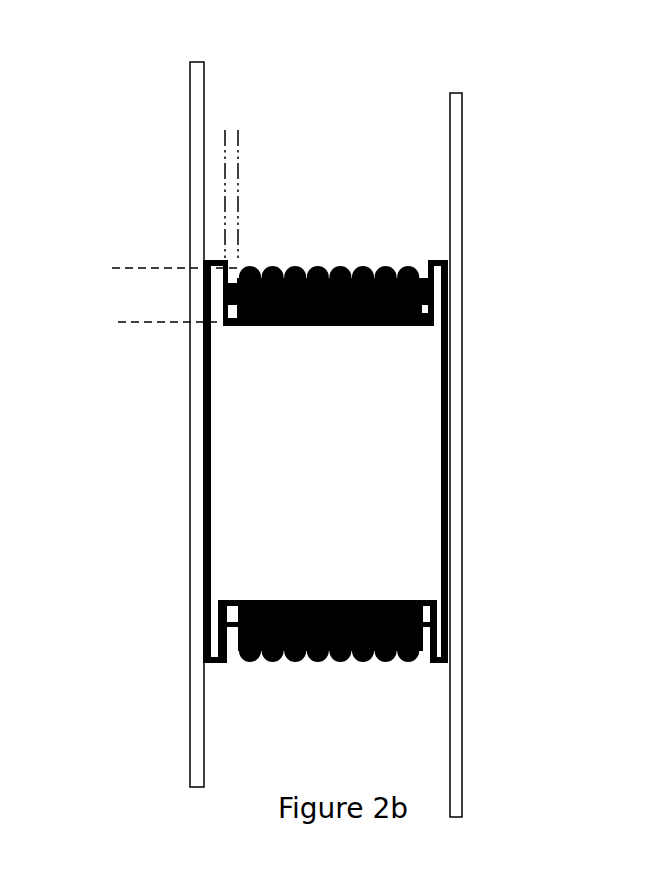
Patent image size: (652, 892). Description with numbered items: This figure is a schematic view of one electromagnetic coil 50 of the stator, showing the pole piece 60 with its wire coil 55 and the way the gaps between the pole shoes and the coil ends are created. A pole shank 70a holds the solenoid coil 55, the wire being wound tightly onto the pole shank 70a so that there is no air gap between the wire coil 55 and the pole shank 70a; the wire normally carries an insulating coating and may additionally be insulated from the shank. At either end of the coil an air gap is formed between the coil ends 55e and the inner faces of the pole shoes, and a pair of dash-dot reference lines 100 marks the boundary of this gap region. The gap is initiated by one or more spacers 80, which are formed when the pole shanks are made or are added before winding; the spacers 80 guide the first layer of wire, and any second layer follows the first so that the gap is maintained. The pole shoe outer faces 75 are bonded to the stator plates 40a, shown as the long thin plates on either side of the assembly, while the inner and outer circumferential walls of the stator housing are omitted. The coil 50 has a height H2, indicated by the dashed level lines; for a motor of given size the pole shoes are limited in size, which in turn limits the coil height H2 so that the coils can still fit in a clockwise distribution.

The stator plate 40a is at (178, 145).
The electromagnetic coil 50 is at (299, 173).
The coil 55 is at (335, 263).
The coil end 55e is at (237, 302).
The pole piece 60 is at (285, 520).
The pole shank 70a is at (283, 330).
The pole shoe outer face 75 is at (203, 490).
The spacer 80 is at (432, 315).
The reference axis 100 is at (252, 179).
The coil height H2 is at (155, 295).